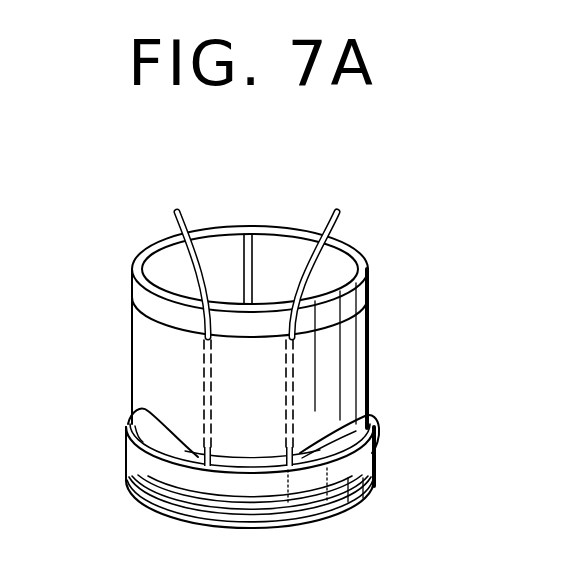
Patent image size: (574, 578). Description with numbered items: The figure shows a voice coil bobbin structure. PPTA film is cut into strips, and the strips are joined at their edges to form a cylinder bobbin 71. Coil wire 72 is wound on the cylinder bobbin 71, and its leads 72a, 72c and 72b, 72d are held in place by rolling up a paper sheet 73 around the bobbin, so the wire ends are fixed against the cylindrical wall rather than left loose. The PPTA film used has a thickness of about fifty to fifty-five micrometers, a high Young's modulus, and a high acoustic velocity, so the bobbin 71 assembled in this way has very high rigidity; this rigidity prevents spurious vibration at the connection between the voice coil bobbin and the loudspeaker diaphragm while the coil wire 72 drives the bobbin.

The cylinder bobbin 71 is at (134, 290).
The coil wire 72 is at (377, 461).
The lead of coil wire 72a is at (376, 414).
The lead of coil wire 72b is at (134, 411).
The lead of coil wire 72c is at (356, 254).
The lead of coil wire 72d is at (186, 260).
The paper sheet 73 is at (146, 364).